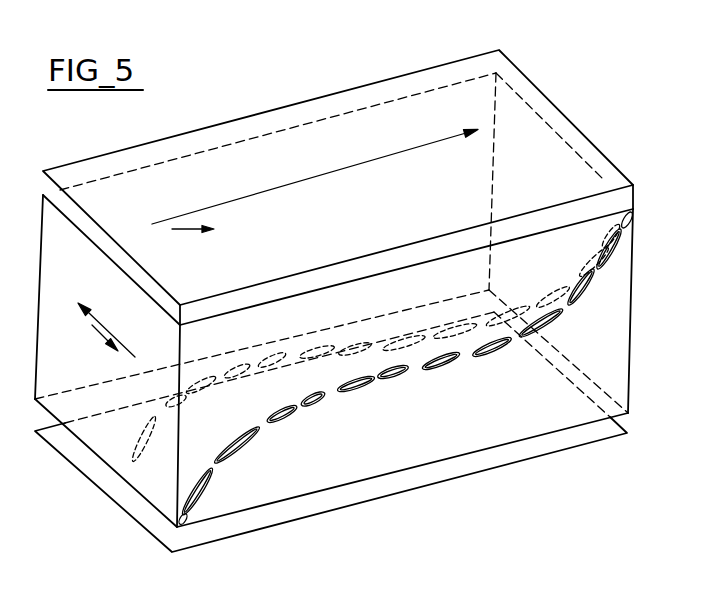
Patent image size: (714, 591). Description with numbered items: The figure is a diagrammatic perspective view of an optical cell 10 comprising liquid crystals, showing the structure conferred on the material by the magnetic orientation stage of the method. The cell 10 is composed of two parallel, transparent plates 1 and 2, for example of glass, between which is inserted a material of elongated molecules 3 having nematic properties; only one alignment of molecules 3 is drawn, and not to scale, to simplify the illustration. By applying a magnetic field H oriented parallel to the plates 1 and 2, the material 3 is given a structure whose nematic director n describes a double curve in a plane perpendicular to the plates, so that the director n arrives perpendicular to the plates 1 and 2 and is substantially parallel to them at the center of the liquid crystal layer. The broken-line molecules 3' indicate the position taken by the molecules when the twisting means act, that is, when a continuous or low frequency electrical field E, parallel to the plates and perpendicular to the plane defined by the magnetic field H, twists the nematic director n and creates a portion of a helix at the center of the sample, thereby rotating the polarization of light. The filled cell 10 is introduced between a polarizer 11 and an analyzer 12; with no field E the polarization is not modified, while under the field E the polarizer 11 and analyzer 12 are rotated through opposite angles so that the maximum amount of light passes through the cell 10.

The transparent plate 1 is at (337, 214).
The transparent plate 2 is at (377, 427).
The material of elongated molecules 3 is at (405, 367).
The molecules in twisted position 3' is at (375, 338).
The optical cell 10 is at (608, 180).
The polarizer 11 is at (461, 58).
The analyzer 12 is at (595, 445).
The nematic director n is at (450, 367).
The magnetic field H is at (315, 196).
The electrical field E is at (106, 335).